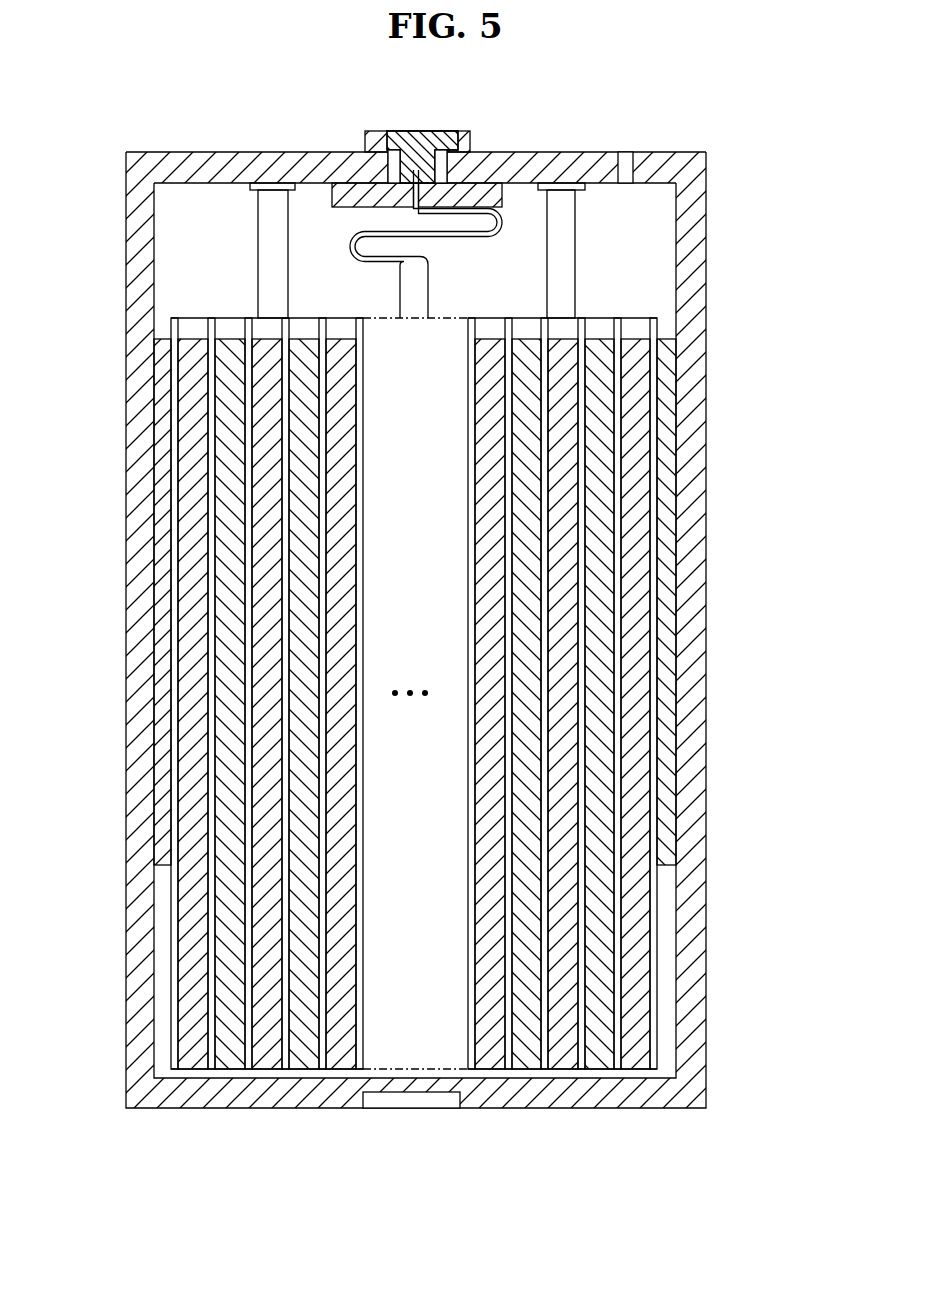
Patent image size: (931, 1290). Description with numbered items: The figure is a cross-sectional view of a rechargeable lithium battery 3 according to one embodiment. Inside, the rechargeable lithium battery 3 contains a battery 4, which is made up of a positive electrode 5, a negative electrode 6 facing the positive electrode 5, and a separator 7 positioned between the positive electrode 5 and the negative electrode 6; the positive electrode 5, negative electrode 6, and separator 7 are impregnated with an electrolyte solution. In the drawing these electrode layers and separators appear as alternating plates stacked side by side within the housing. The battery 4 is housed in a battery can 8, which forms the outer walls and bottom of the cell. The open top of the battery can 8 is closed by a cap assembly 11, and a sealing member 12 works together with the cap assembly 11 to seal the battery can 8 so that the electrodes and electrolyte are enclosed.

The rechargeable lithium battery 3 is at (752, 261).
The battery 4 is at (592, 291).
The positive electrode 5 is at (640, 997).
The negative electrode 6 is at (222, 905).
The separator 7 is at (172, 997).
The battery can 8 is at (125, 288).
The cap assembly 11 is at (531, 158).
The sealing member 12 is at (377, 131).